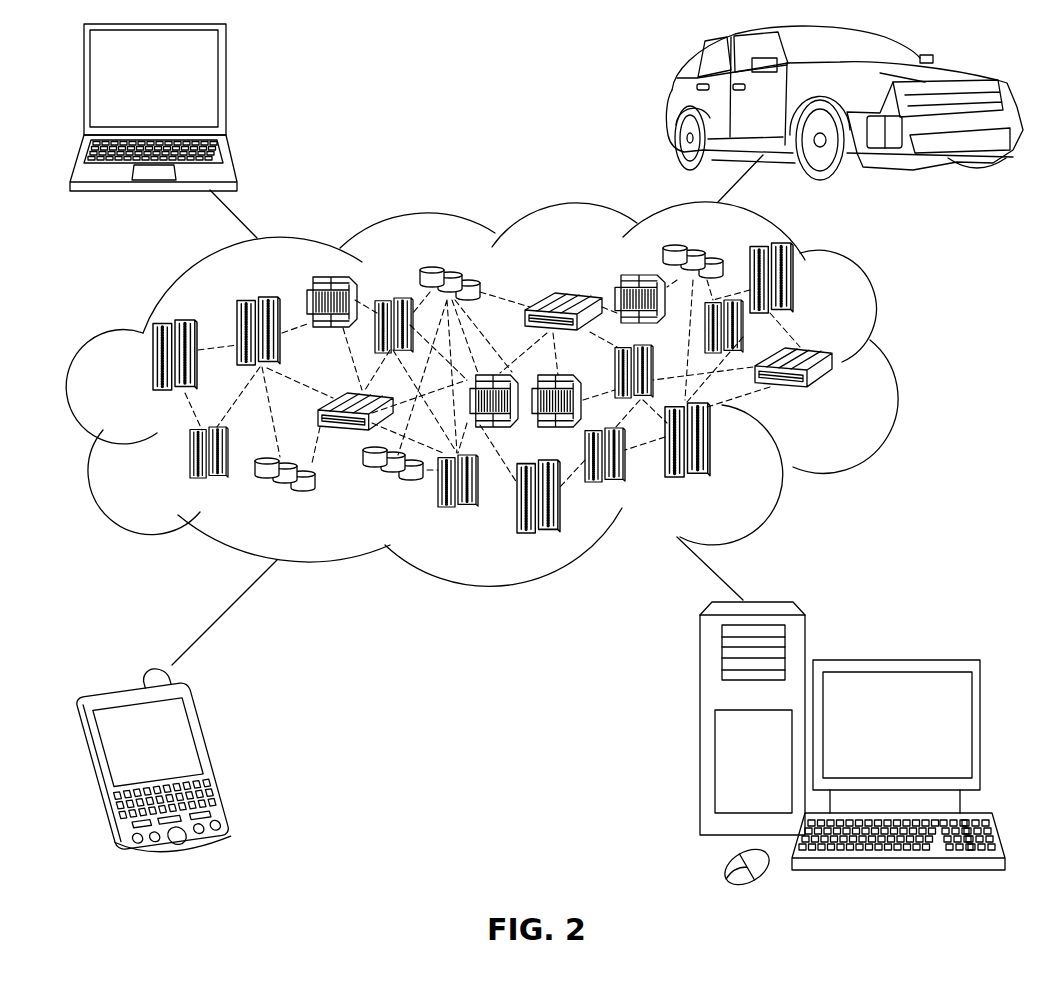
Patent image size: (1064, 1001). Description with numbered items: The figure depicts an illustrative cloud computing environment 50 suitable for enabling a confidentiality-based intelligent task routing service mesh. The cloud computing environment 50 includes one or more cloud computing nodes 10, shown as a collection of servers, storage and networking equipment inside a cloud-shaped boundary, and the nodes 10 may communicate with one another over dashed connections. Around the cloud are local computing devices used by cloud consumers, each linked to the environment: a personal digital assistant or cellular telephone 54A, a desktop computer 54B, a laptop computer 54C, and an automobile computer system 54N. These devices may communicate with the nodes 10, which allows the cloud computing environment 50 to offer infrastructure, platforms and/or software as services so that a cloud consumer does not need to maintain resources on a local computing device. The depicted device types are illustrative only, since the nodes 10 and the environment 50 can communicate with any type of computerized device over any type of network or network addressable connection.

The cloud computing nodes 10 is at (836, 397).
The cloud computing environment 50 is at (895, 365).
The personal digital assistant (PDA) or cellular telephone 54A is at (212, 755).
The desktop computer 54B is at (890, 660).
The laptop computer 54C is at (225, 88).
The automobile computer system 54N is at (668, 108).